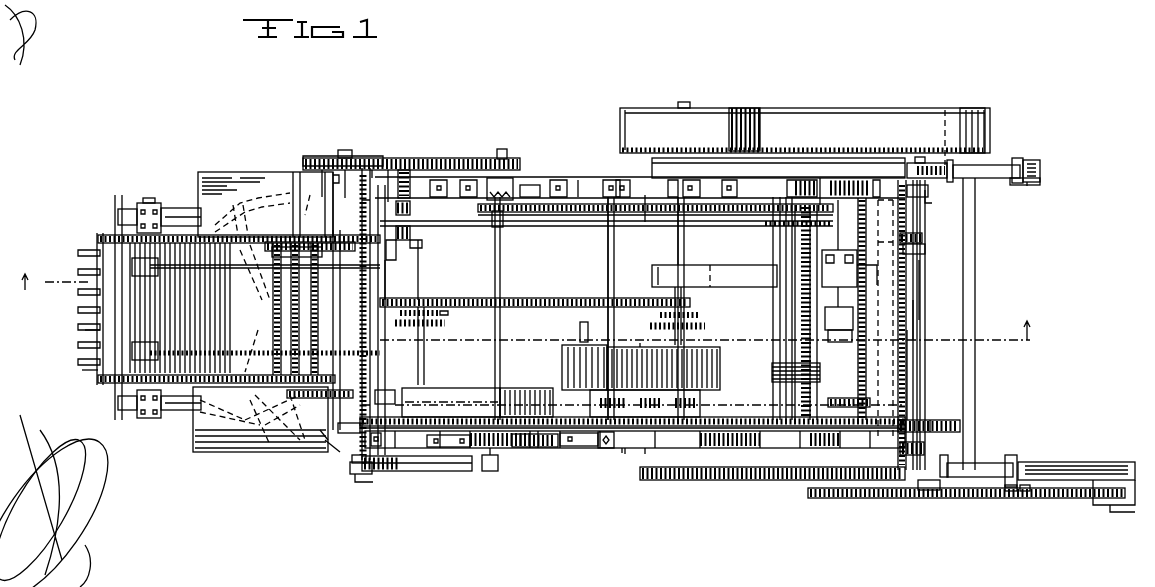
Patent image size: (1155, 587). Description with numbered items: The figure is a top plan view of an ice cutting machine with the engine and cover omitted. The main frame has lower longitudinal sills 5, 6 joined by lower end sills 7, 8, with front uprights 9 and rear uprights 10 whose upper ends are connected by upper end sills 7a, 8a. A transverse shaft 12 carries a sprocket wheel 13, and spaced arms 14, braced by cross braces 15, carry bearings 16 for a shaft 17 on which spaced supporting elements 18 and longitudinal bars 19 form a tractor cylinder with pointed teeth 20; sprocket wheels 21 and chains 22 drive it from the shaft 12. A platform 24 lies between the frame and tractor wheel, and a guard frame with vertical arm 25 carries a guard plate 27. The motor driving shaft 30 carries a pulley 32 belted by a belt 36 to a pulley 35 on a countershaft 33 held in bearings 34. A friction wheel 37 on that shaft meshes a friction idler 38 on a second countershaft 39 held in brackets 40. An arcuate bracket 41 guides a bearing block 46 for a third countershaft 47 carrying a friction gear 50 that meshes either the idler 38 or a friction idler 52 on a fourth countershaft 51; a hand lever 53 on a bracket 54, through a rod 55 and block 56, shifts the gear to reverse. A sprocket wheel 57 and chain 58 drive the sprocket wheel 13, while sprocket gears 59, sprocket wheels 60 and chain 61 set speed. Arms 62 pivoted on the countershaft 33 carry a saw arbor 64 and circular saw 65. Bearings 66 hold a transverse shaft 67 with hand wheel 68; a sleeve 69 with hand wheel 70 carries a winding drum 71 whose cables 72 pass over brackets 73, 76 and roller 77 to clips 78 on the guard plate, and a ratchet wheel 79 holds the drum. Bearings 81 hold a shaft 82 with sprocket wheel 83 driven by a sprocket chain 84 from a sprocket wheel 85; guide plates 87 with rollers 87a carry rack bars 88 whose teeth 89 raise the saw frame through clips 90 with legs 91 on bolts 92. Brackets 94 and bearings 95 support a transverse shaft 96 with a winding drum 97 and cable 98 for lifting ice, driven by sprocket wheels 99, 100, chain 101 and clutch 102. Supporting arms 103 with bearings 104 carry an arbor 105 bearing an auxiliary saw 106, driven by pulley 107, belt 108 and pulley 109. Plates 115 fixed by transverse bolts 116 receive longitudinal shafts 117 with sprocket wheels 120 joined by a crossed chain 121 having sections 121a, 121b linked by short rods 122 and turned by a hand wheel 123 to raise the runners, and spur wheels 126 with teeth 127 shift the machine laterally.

The lower longitudinal sill 5 is at (585, 448).
The lower longitudinal sill 6 is at (578, 185).
The lower end sill 7 is at (906, 270).
The upper end sill 7a is at (920, 326).
The lower end sill 8 is at (393, 185).
The upper end sill 8a is at (354, 458).
The front upright 9 is at (885, 320).
The rear upright 10 is at (362, 204).
The transverse shaft 12 is at (345, 146).
The sprocket wheel 13 is at (313, 156).
The spaced arm 14 is at (178, 208).
The cross brace 15 is at (300, 318).
The bearing 16 is at (145, 205).
The shaft 17 is at (150, 198).
The supporting element 18 is at (96, 250).
The longitudinal bar 19 is at (92, 345).
The pointed tooth 20 is at (92, 330).
The sprocket wheel 21 is at (100, 233).
The chain 22 is at (182, 220).
The platform 24 is at (256, 452).
The vertical arm 25 is at (120, 195).
The guard plate 27 is at (92, 370).
The driving shaft 30 is at (582, 334).
The pulley 32 is at (565, 347).
The countershaft 33 is at (676, 247).
The bearing 34 is at (650, 195).
The pulley 35 is at (720, 355).
The belt 36 is at (645, 345).
The friction wheel 37 is at (705, 400).
The friction idler 38 is at (575, 448).
The second countershaft 39 is at (607, 258).
The bracket 40 is at (618, 180).
The arcuate bracket 41 is at (540, 465).
The bearing block 46 is at (510, 450).
The third countershaft 47 is at (496, 352).
The friction gear 50 is at (455, 388).
The fourth countershaft 51 is at (420, 300).
The friction idler 52 is at (388, 392).
The hand lever 53 is at (362, 474).
The bracket 54 is at (382, 440).
The rod 55 is at (425, 471).
The block 56 is at (487, 471).
The sprocket wheel 57 is at (505, 152).
The chain 58 is at (460, 158).
The sprocket gear 59 is at (430, 324).
The sprocket wheel 60 is at (702, 320).
The chain 61 is at (540, 298).
The arm 62 is at (1040, 166).
The saw arbor 64 is at (975, 372).
The circular saw 65 is at (1065, 500).
The bearing 66 is at (403, 168).
The transverse shaft 67 is at (358, 480).
The hand wheel 68 is at (326, 446).
The sleeve 69 is at (388, 245).
The hand wheel 70 is at (374, 162).
The winding drum 71 is at (385, 290).
The cable 72 is at (262, 300).
The bracket 73 is at (280, 425).
The bracket 76 is at (345, 242).
The roller 77 is at (338, 347).
The clip 78 is at (255, 309).
The ratchet wheel 79 is at (348, 175).
The bearing 81 is at (925, 197).
The shaft 82 is at (922, 420).
The sprocket wheel 83 is at (935, 421).
The sprocket chain 84 is at (625, 450).
The sprocket wheel 85 is at (349, 431).
The guide plate 87 is at (951, 182).
The roller 87a is at (940, 160).
The rack bar 88 is at (992, 165).
The teeth 89 is at (908, 140).
The inverted U-shaped clip 90 is at (1015, 185).
The leg 91 is at (1028, 186).
The bolt 92 is at (1018, 160).
The bracket 94 is at (770, 178).
The bearing 95 is at (810, 195).
The transverse shaft 96 is at (822, 192).
The winding drum 97 is at (786, 312).
The cable 98 is at (772, 370).
The sprocket wheel 99 is at (830, 217).
The sprocket wheel 100 is at (485, 208).
The chain 101 is at (570, 215).
The clutch 102 is at (503, 222).
The supporting arm 103 is at (845, 250).
The bearing 104 is at (773, 250).
The arbor 105 is at (848, 298).
The auxiliary saw 106 is at (842, 343).
The pulley 107 is at (857, 282).
The belt 108 is at (725, 265).
The pulley 109 is at (708, 270).
The plate 115 is at (320, 432).
The transverse bolt 116 is at (322, 185).
The longitudinal shaft 117 is at (548, 232).
The sprocket wheel 120 is at (840, 450).
The crossed chain 121 is at (405, 322).
The chain end section 121a is at (852, 398).
The chain end section 121b is at (416, 248).
The short rod 122 is at (915, 302).
The hand wheel 123 is at (295, 182).
The spur wheel 126 is at (410, 205).
The teeth 127 is at (410, 235).